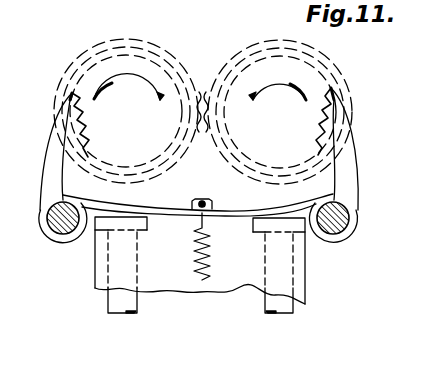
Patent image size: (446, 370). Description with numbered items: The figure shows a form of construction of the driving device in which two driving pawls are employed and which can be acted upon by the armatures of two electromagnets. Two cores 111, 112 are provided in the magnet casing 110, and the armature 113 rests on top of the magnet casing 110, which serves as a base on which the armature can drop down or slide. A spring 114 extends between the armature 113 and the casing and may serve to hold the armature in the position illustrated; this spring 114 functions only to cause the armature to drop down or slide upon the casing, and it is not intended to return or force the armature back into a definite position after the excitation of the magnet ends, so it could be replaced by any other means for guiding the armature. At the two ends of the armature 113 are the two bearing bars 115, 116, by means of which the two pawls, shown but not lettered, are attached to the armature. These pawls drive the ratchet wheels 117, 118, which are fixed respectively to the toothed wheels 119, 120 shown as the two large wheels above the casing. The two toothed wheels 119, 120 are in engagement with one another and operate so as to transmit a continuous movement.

The magnet casing 110 is at (167, 280).
The core 111 is at (123, 312).
The core 112 is at (279, 315).
The armature 113 is at (163, 212).
The spring 114 is at (207, 281).
The bearing bar 115 is at (47, 219).
The bearing bar 116 is at (338, 232).
The ratchet wheel 117 is at (80, 92).
The ratchet wheel 118 is at (336, 104).
The toothed wheel 119 is at (170, 56).
The toothed wheel 120 is at (228, 62).